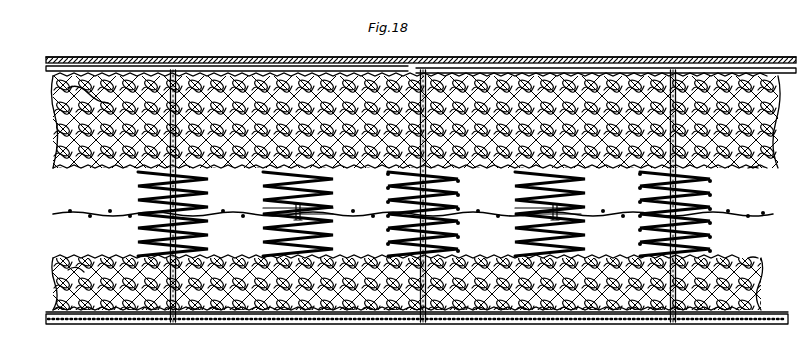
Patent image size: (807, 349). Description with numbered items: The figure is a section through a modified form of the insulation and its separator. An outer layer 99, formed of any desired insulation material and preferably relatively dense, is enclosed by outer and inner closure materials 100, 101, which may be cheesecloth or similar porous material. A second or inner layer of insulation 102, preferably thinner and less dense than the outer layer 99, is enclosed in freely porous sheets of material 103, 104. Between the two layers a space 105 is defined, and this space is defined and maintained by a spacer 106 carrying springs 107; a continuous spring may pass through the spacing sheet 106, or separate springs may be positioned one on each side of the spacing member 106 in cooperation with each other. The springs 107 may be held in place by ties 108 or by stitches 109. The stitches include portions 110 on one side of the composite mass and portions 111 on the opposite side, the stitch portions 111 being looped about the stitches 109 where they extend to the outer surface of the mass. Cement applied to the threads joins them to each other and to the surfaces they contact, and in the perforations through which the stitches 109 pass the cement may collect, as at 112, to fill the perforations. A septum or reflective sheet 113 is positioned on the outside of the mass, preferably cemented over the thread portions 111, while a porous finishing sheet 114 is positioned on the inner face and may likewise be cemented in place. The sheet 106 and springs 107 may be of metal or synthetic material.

The outer layer 99 is at (762, 108).
The outer closure material 100 is at (758, 96).
The inner closure material 101 is at (748, 162).
The inner layer of insulation 102 is at (735, 274).
The porous sheet 103 is at (748, 256).
The porous sheet 104 is at (765, 305).
The space 105 is at (90, 168).
The spacer 106 is at (758, 207).
The springs 107 is at (256, 176).
The ties 108 is at (300, 200).
The stitches 109 is at (507, 200).
The stitch portions 110 is at (105, 318).
The stitch portions 111 is at (224, 52).
The cement 112 is at (162, 64).
The septum or reflective sheet 113 is at (570, 50).
The porous finishing sheet 114 is at (605, 318).